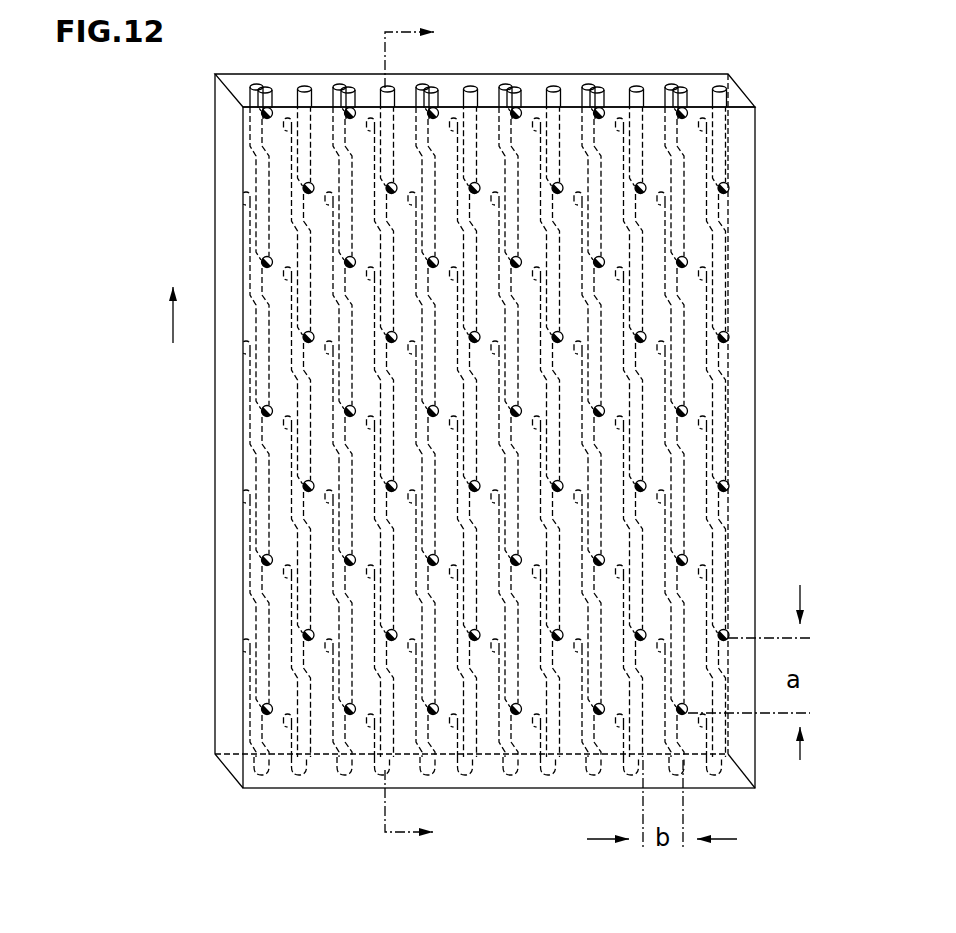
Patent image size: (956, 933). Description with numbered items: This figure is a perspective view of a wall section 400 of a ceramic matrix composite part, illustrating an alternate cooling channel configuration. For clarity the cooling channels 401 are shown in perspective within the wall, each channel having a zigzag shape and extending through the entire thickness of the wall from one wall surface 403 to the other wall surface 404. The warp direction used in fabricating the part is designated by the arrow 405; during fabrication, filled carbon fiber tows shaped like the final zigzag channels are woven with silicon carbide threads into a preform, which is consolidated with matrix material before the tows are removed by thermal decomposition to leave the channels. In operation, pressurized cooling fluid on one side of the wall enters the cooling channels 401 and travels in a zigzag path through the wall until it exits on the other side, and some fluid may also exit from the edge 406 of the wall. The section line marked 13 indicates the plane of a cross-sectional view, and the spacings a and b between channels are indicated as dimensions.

The wall section 400 is at (160, 147).
The cooling channels 401 is at (672, 347).
The wall surface 403 is at (738, 432).
The other wall surface 404 is at (232, 672).
The arrow 405 is at (173, 312).
The edge 406 is at (697, 87).
The section line 13- 13 is at (440, 432).